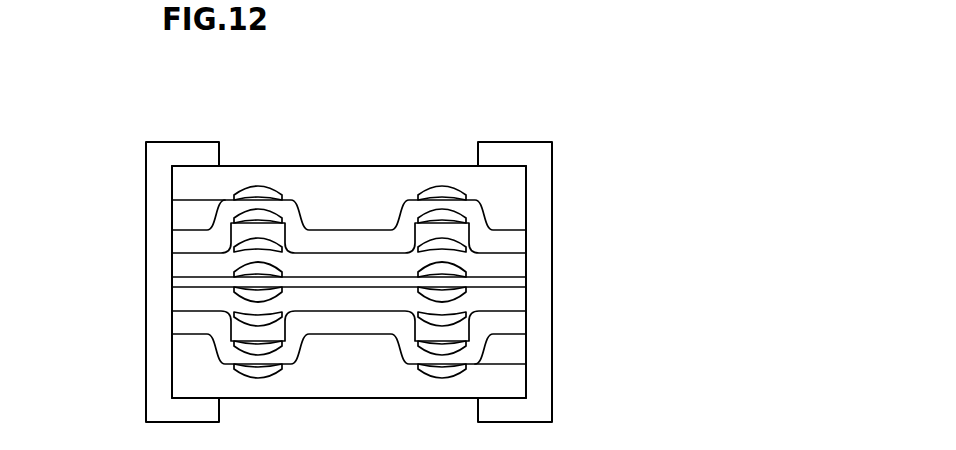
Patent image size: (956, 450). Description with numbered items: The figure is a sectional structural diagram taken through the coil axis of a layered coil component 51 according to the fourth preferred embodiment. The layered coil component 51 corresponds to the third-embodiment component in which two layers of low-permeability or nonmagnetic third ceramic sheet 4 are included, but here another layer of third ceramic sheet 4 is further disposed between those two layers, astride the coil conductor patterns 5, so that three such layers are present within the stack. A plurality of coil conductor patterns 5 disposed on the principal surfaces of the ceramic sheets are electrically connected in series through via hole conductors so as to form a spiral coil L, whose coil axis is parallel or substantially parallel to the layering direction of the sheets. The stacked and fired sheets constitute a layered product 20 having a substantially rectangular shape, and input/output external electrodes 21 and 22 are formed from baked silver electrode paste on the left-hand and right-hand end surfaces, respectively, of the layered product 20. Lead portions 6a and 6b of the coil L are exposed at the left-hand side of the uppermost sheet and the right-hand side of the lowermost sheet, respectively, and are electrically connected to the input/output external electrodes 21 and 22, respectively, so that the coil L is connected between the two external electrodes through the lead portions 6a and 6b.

The layered coil component 51 is at (182, 105).
The layered product 20 is at (507, 212).
The input/output external electrode 21 is at (167, 153).
The input/output external electrode 22 is at (540, 160).
The third ceramic sheet 4 is at (338, 242).
The coil conductor pattern 5 is at (243, 273).
The lead portion 6a is at (181, 199).
The lead portion 6b is at (517, 367).
The coil L is at (428, 188).